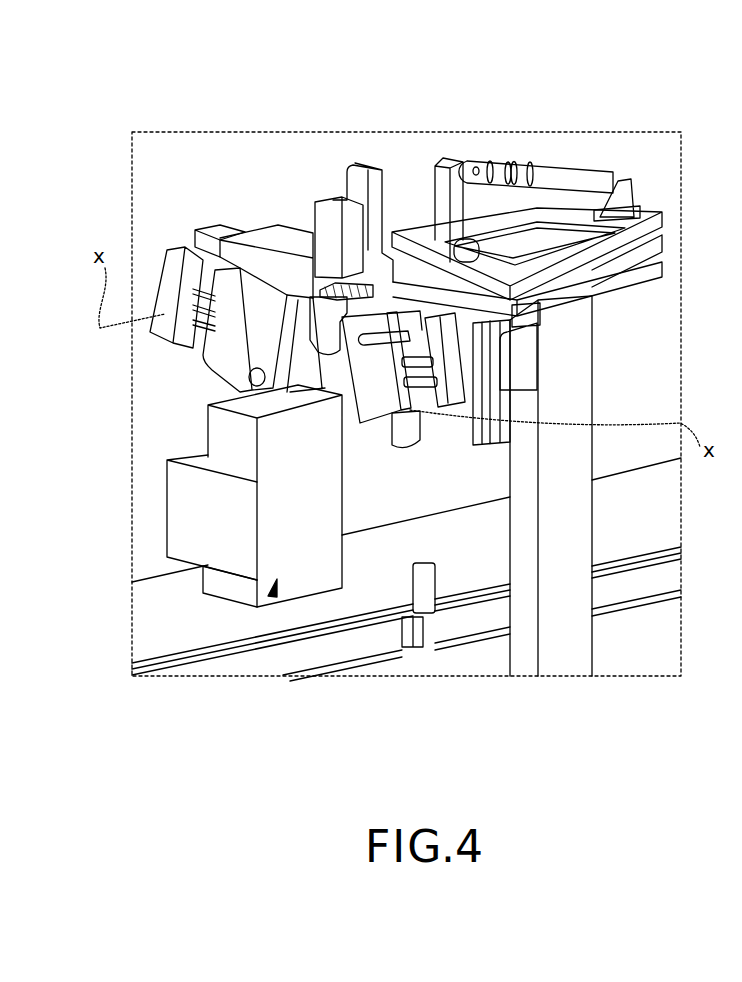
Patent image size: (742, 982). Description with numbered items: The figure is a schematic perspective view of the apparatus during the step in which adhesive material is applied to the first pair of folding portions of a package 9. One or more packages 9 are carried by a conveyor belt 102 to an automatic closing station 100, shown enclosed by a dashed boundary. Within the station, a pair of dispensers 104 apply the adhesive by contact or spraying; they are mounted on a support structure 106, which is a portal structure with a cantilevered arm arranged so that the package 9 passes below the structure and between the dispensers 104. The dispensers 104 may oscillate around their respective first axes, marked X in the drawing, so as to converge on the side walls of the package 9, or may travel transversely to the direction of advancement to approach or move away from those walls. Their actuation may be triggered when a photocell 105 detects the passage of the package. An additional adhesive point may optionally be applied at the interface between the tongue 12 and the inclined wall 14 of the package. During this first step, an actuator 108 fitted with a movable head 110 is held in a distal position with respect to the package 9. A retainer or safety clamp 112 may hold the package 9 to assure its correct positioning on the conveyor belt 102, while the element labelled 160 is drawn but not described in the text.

The automatic closing station 100 is at (437, 128).
The conveyor belt 102 is at (617, 540).
The dispensers 104 is at (215, 353).
The photocell 105 is at (431, 600).
The support structure 106 is at (570, 352).
The actuator 108 is at (315, 183).
The movable head 110 is at (290, 390).
The safety clamp 112 is at (217, 600).
The tongue 12 is at (380, 368).
The inclined wall 14 is at (313, 297).
The control box 160 is at (208, 428).
The package 9 is at (273, 600).